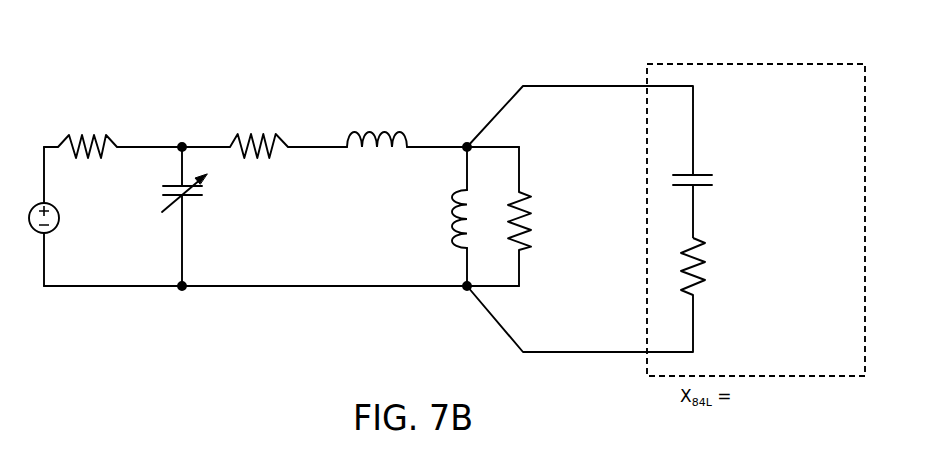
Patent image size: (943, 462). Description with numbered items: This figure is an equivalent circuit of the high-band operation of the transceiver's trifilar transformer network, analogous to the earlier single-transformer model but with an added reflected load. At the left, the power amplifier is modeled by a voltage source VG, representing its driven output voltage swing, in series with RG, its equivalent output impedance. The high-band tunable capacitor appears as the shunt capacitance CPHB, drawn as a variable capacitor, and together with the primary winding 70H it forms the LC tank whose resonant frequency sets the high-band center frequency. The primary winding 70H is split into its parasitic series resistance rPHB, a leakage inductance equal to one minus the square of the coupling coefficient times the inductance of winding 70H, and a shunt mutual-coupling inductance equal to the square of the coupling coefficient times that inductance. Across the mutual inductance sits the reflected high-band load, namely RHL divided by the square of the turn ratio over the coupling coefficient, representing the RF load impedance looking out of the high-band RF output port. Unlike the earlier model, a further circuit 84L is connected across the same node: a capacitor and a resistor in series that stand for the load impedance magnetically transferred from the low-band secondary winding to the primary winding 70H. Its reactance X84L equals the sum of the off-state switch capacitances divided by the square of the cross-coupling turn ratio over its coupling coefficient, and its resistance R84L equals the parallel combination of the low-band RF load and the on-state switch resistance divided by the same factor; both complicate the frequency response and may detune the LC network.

The circuit 84L is at (756, 203).
The primary winding 70H is at (394, 175).
The equivalent output impedance RG is at (87, 132).
The driven output voltage swing VG is at (56, 218).
The capacitance of the tunable capacitor CPHB is at (199, 201).
The input parasitic series resistance rPHB is at (259, 132).
The RF load impedance RHL is at (570, 210).
The reactance X84L is at (850, 153).
The resistance R84L is at (769, 286).